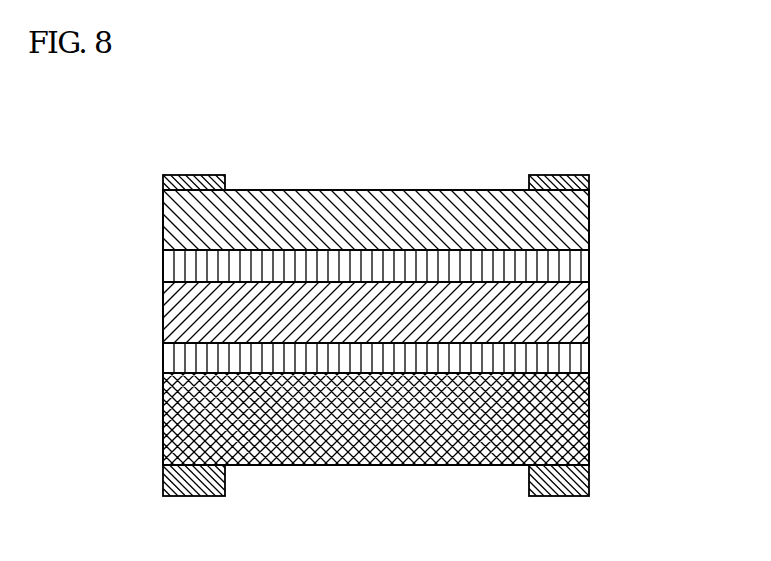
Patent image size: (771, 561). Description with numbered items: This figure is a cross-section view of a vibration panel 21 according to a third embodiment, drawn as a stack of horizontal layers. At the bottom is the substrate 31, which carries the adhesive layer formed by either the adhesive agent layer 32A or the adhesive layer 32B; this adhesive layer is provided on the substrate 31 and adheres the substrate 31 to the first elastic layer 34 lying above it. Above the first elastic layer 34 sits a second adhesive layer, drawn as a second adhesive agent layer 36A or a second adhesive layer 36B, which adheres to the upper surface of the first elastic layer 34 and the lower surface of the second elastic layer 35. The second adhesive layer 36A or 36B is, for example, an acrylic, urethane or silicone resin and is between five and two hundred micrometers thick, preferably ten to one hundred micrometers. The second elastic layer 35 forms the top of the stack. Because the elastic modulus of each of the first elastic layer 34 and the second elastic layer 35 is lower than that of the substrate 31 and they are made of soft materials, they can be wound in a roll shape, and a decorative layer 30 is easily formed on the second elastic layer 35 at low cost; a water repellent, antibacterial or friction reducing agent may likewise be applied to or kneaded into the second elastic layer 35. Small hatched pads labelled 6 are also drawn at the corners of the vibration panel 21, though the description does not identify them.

The vibration panel 21 is at (388, 125).
The decorative layer 30 is at (175, 181).
The second elastic layer 35 is at (576, 218).
The second adhesive agent layer 36A is at (452, 265).
The second adhesive layer 36B is at (578, 274).
The first elastic layer 34 is at (574, 315).
The adhesive agent layer 32A is at (451, 353).
The adhesive layer 32B is at (576, 354).
The substrate 31 is at (578, 428).
The lower electrode pad 6 is at (166, 472).